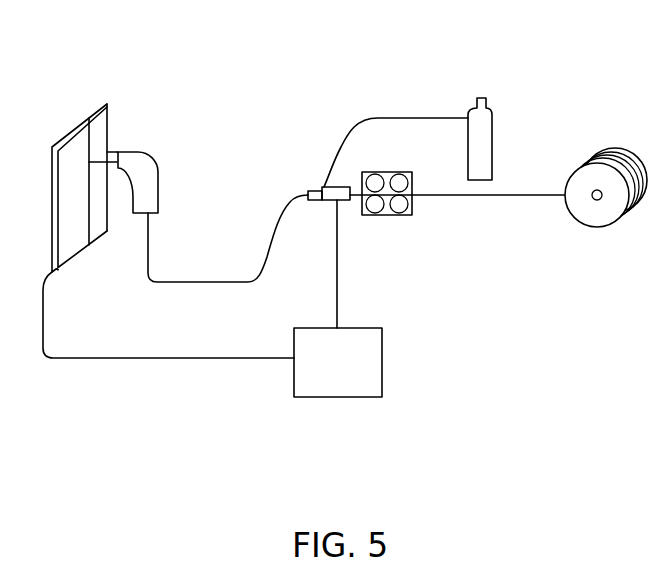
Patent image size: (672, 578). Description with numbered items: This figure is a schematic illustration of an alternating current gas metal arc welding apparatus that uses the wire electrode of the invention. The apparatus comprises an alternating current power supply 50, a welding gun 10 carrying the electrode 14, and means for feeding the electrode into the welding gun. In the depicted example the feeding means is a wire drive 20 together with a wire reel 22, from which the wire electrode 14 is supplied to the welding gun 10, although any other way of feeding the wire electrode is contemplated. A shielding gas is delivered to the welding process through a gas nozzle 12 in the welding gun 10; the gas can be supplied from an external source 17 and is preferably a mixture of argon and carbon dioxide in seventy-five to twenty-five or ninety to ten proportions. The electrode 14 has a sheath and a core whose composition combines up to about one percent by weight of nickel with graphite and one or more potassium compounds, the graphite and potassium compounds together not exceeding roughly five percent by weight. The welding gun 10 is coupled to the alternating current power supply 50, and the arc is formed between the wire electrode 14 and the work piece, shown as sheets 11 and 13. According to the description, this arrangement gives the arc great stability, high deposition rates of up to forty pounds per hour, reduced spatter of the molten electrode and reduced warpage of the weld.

The welding gun 10 is at (153, 202).
The sheet 11 is at (95, 122).
The gas nozzle 12 is at (113, 151).
The sheet 13 is at (70, 183).
The electrode 14 is at (93, 160).
The external source 17 is at (485, 138).
The wire drive 20 is at (385, 217).
The wire reel 22 is at (587, 173).
The alternating current power supply 50 is at (343, 385).